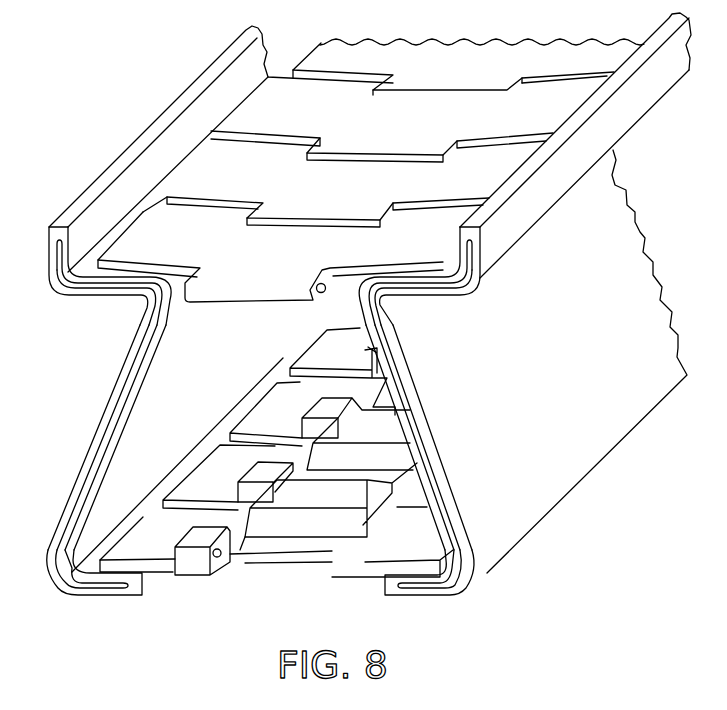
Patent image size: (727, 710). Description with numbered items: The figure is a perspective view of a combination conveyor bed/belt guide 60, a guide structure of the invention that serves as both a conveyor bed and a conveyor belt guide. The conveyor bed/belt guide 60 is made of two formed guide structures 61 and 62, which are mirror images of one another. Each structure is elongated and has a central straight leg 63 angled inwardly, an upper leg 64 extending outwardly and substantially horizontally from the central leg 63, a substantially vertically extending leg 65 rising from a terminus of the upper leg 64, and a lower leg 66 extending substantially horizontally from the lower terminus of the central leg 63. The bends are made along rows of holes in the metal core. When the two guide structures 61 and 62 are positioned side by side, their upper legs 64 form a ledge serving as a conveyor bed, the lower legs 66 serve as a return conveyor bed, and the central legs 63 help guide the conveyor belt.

The combination conveyor bed/belt guide 60 is at (250, 437).
The formed guide structure 61 is at (102, 422).
The formed guide structure 62 is at (610, 338).
The central straight leg 63 is at (226, 371).
The upper leg 64 is at (88, 287).
The vertically extending leg 65 is at (155, 132).
The lower leg 66 is at (113, 593).